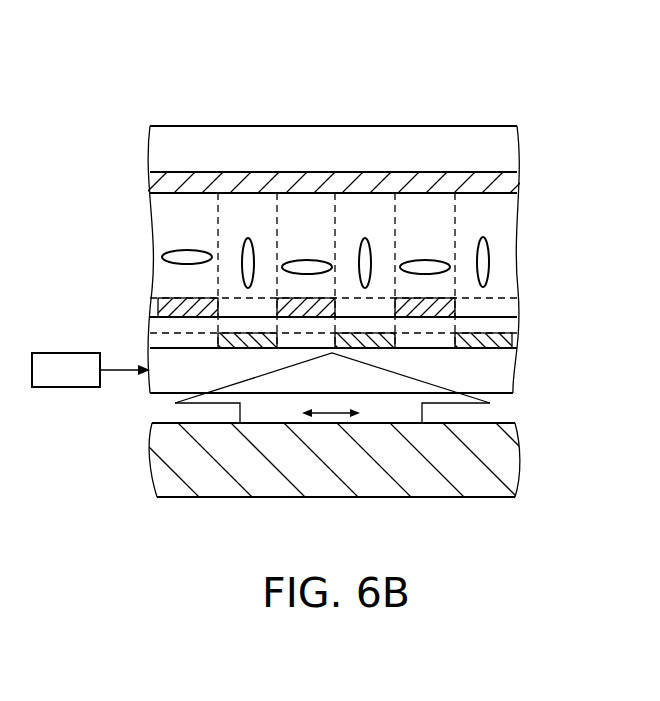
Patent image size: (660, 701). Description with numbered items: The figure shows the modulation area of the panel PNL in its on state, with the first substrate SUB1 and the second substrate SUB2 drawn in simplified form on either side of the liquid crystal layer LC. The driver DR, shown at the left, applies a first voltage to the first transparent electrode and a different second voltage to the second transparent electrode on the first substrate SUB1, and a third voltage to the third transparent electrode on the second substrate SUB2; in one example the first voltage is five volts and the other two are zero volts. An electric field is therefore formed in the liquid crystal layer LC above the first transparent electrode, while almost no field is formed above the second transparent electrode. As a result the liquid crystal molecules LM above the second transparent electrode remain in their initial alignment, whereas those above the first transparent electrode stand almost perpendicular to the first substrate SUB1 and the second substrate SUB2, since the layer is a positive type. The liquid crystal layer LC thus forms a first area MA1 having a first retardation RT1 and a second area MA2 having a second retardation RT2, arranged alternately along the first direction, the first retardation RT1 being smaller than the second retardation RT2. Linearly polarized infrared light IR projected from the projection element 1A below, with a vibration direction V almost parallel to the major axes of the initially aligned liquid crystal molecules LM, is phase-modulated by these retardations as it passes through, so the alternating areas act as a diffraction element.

The panel PNL is at (545, 132).
The second substrate SUB2 is at (513, 153).
The liquid crystal layer LC is at (500, 229).
The liquid crystal molecules LM is at (170, 254).
The first retardation RT1 is at (306, 270).
The second retardation RT2 is at (366, 270).
The first substrate SUB1 is at (502, 377).
The driver DR is at (91, 370).
The infrared light IR is at (405, 417).
The vibration direction V is at (332, 413).
The projection element 1A is at (157, 459).
The first area MA1 is at (245, 208).
The second area MA2 is at (303, 208).